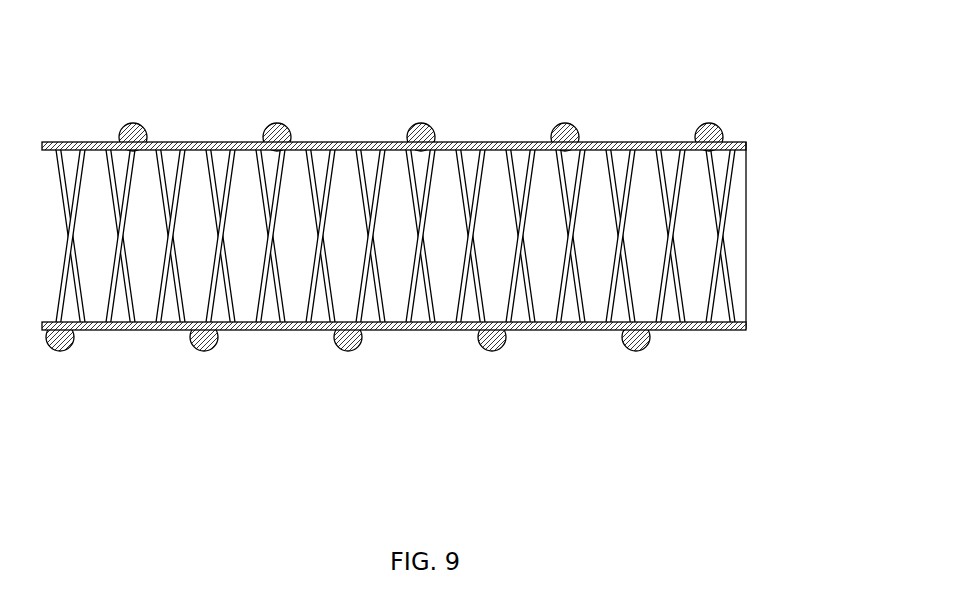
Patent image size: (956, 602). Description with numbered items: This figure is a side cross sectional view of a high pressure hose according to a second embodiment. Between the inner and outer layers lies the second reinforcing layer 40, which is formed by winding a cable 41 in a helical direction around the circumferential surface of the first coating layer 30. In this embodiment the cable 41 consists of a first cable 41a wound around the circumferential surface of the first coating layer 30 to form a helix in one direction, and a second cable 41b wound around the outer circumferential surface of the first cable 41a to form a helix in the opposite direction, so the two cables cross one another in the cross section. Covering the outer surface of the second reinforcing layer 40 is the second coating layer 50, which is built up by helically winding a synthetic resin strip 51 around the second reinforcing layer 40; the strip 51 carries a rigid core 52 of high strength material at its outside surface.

The first coating layer 30 is at (645, 141).
The second reinforcing layer 40 is at (460, 236).
The cable 41 is at (785, 236).
The first cable 41a is at (735, 172).
The second cable 41b is at (720, 211).
The second coating layer 50 is at (394, 398).
The synthetic resin strip 51 is at (440, 330).
The rigid core 52 is at (350, 352).